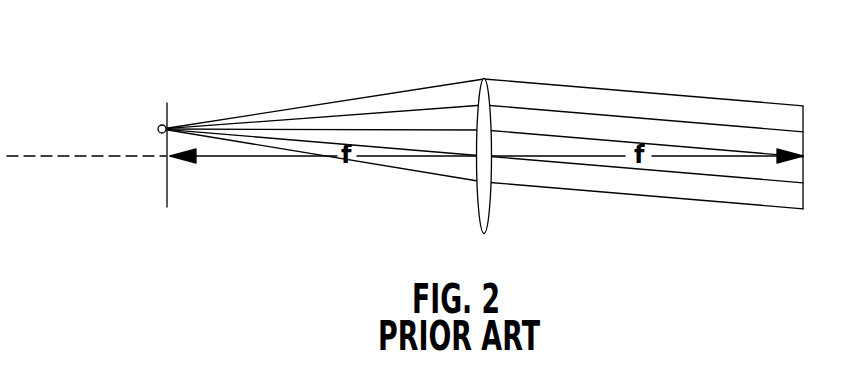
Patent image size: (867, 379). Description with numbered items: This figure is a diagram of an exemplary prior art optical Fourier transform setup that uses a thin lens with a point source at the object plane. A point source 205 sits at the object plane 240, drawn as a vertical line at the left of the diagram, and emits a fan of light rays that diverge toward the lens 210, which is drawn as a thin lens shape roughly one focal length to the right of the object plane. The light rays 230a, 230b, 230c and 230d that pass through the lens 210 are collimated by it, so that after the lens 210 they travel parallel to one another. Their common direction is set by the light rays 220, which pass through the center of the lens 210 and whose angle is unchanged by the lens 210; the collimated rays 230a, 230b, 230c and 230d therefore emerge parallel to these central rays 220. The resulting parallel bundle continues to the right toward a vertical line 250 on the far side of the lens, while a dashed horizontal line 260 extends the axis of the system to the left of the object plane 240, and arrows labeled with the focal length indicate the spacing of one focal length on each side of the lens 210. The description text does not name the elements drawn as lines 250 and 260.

The point source 205 is at (159, 127).
The lens 210 is at (486, 233).
The light rays 220 is at (320, 143).
The light ray 230a is at (282, 111).
The light ray 230b is at (357, 113).
The light ray 230c is at (430, 130).
The light ray 230d is at (402, 169).
The object plane 240 is at (167, 191).
The image plane 250 is at (803, 204).
The optical axis 260 is at (88, 156).